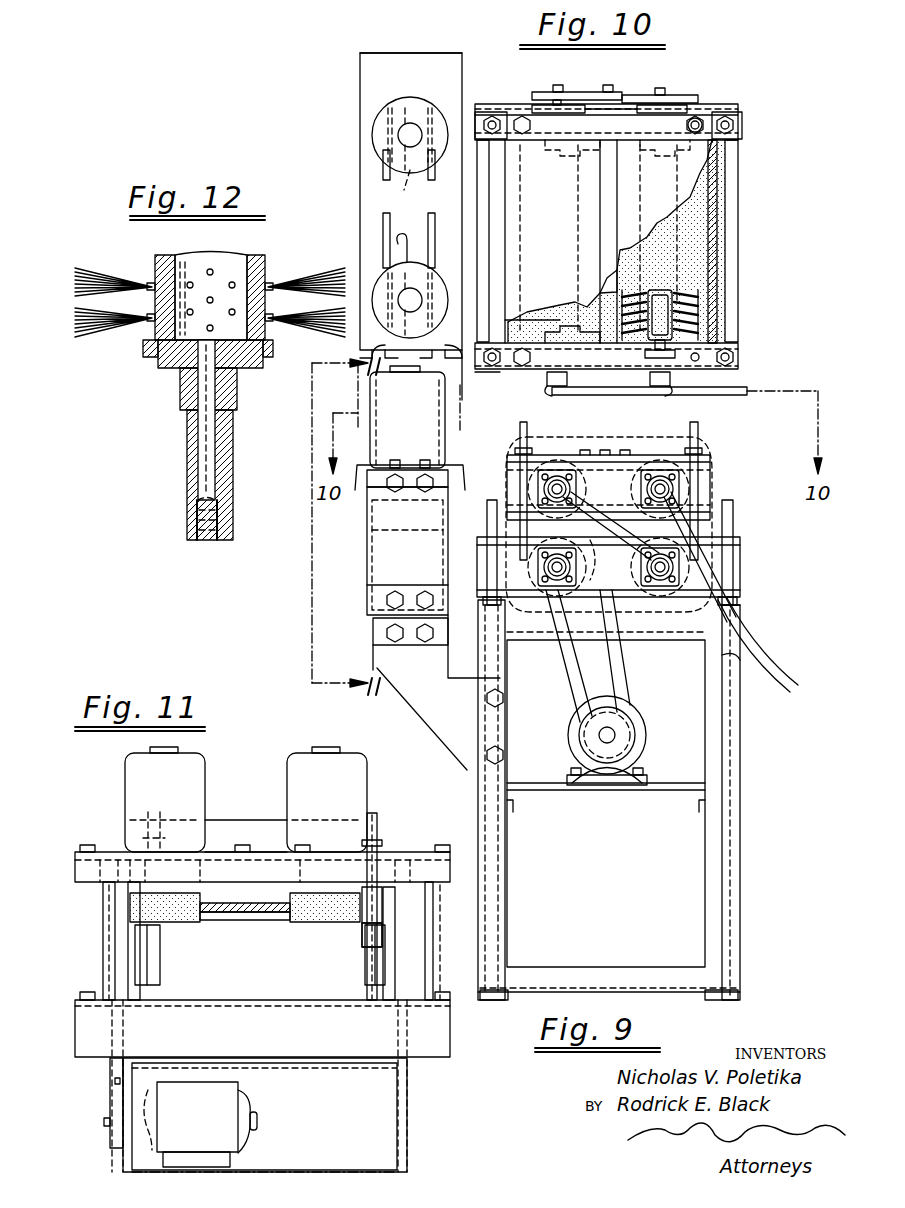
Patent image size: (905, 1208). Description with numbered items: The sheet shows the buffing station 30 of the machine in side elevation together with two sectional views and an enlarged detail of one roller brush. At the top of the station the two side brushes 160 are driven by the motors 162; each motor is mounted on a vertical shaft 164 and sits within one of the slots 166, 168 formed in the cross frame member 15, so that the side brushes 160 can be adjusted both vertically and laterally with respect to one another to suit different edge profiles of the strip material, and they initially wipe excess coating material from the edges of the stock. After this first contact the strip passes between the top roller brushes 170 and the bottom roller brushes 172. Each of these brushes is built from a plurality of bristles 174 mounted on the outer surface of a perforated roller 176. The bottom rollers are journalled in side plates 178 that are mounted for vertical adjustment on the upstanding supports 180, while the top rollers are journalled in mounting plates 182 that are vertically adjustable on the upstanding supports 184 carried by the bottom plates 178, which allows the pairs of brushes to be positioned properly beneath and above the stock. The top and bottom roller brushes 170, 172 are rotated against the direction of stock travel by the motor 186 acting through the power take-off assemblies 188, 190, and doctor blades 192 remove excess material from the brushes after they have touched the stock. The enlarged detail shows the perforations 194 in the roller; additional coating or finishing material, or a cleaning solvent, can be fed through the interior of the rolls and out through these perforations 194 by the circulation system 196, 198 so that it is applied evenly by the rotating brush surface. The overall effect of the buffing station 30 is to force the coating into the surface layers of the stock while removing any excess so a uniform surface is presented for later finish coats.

In FIG. 9, the cross frame member 15 is at (450, 206).
In FIG. 11, the cross frame member 15 is at (200, 876).
In FIG. 9, the buffing station 30 is at (490, 458).
In FIG. 11, the buffing station 30 is at (235, 805).
In FIG. 9, the side brushes 160 is at (395, 535).
In FIG. 11, the side brushes 160 is at (200, 925).
In FIG. 9, the motors 162 is at (406, 100).
In FIG. 11, the motors 162 is at (178, 798).
In FIG. 9, the vertical shafts 164 is at (406, 92).
In FIG. 9, the slot 166 is at (396, 176).
In FIG. 9, the slot 168 is at (407, 238).
In FIG. 10, the top roller brushes 170 is at (672, 358).
In FIG. 11, the top roller brushes 170 is at (252, 900).
In FIG. 11, the bottom roller brushes 172 is at (252, 925).
In FIG. 12, the bristles 174 is at (105, 288).
In FIG. 12, the perforated rollers 176 is at (262, 288).
In FIG. 9, the side plates 178 is at (740, 578).
In FIG. 11, the side plates 178 is at (375, 962).
In FIG. 10, the upstanding supports 180 is at (730, 124).
In FIG. 9, the upstanding supports 180 is at (490, 510).
In FIG. 11, the upstanding supports 180 is at (388, 948).
In FIG. 10, the mounting plates 182 is at (622, 374).
In FIG. 9, the mounting plates 182 is at (712, 502).
In FIG. 11, the mounting plates 182 is at (398, 905).
In FIG. 10, the upstanding supports 184 is at (700, 122).
In FIG. 9, the upstanding supports 184 is at (526, 430).
In FIG. 11, the upstanding supports 184 is at (378, 827).
In FIG. 9, the motor 186 is at (645, 728).
In FIG. 11, the motor 186 is at (212, 1129).
In FIG. 10, the power take-off assembly 188 is at (590, 92).
In FIG. 9, the power take-off assembly 188 is at (545, 636).
In FIG. 11, the power take-off assembly 188 is at (110, 1100).
In FIG. 10, the power take-off assembly 190 is at (640, 102).
In FIG. 9, the power take-off assembly 190 is at (690, 482).
In FIG. 10, the doctor blades 192 is at (588, 308).
In FIG. 12, the perforations 194 is at (188, 282).
In FIG. 9, the circulation system 196 is at (770, 652).
In FIG. 9, the circulation system 198 is at (649, 557).